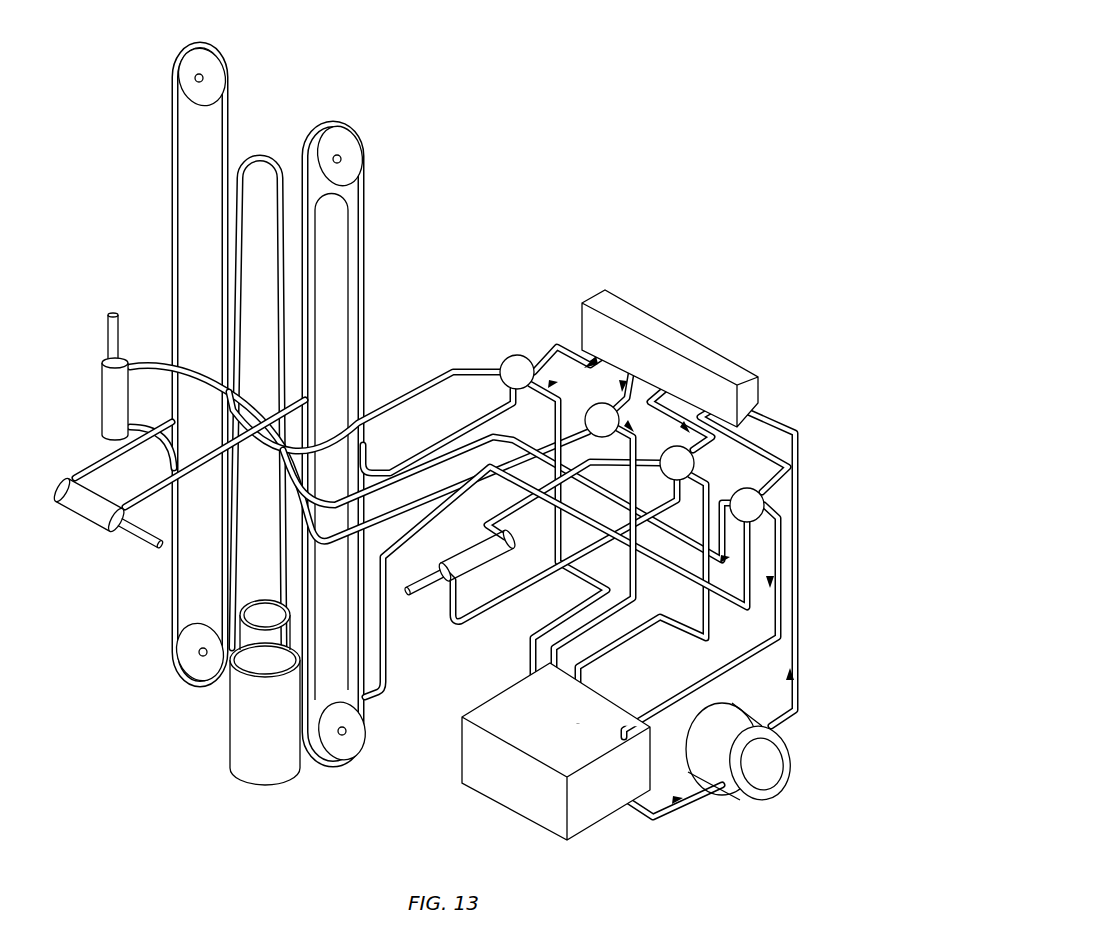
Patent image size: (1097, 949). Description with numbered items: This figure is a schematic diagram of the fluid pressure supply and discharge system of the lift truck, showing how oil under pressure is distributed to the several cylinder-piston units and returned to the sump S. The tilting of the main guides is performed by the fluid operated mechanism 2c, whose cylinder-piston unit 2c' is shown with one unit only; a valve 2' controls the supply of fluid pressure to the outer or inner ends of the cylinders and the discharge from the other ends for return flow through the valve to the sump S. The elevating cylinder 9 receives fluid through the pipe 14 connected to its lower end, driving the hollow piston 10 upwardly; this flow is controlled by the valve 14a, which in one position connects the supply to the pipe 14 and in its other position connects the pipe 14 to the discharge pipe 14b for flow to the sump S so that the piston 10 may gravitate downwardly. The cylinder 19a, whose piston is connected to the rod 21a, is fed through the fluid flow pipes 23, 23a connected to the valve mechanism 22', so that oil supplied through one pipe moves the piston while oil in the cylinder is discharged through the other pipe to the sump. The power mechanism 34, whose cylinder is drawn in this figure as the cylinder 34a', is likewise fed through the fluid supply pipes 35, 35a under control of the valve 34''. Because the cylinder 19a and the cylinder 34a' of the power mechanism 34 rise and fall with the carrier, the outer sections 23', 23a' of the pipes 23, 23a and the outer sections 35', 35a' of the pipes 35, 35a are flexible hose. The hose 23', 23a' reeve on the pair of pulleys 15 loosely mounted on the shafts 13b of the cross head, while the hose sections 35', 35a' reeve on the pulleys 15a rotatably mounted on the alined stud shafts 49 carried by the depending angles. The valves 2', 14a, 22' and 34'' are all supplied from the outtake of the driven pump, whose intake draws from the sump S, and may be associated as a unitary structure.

The shaft 13b is at (197, 76).
The pulley 15 is at (225, 54).
The pulley 15a is at (192, 668).
The stud shaft 49 is at (197, 655).
The hose section 35' is at (182, 364).
The fluid supply pipe 35a is at (231, 404).
The hose section 35a' is at (248, 447).
The fluid supply pipe 35 is at (506, 472).
The power mechanism 34 is at (359, 454).
The cylinder 34a' is at (93, 376).
The fluid flow pipe 23 is at (364, 404).
The fluid flow pipe 23a is at (438, 431).
The hose section 23' is at (122, 450).
The hose section 23a' is at (210, 453).
The cylinder 19a is at (93, 508).
The rod 21a is at (147, 547).
The pipe 14 is at (387, 655).
The valve 14a is at (600, 403).
The discharge pipe 14b is at (637, 598).
The valve mechanism 22' is at (517, 357).
The valve 2' is at (700, 463).
The valve 34'' is at (746, 495).
The fluid operated mechanism 2c is at (477, 559).
The cylinder-piston unit 2c' is at (431, 556).
The piston 10 is at (290, 606).
The cylinder 9 is at (243, 724).
The sump S is at (490, 786).